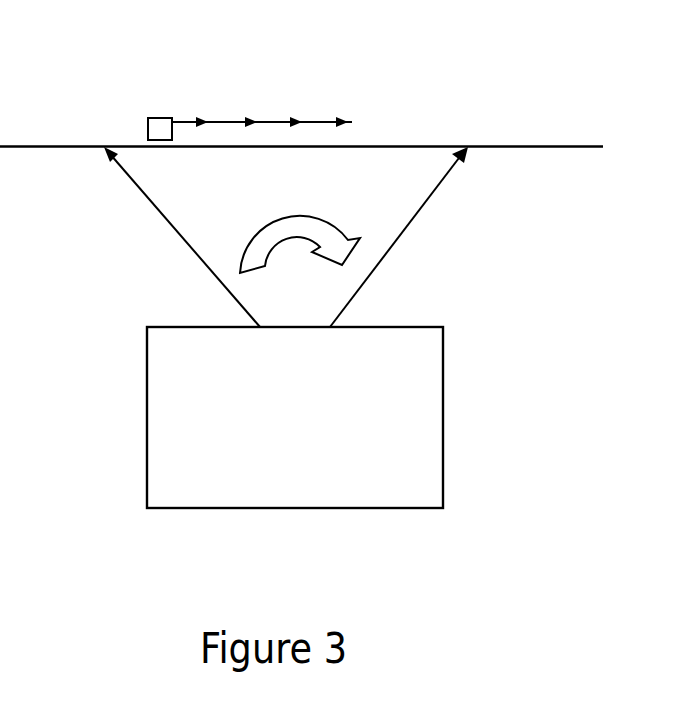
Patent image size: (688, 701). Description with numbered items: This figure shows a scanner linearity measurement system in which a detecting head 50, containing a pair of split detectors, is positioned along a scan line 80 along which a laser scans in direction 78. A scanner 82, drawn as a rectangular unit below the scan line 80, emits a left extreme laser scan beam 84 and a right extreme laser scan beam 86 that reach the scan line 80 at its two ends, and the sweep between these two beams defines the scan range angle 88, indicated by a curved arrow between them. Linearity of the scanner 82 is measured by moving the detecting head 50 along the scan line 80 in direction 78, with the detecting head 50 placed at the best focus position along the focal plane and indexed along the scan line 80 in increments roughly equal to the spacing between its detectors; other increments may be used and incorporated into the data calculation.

The detecting head 50 is at (165, 122).
The scan direction 78 is at (293, 122).
The scan line 80 is at (577, 146).
The scanner 82 is at (175, 427).
The left extreme laser scan beam 84 is at (198, 252).
The right extreme laser scan beam 86 is at (390, 248).
The scan range angle 88 is at (288, 215).